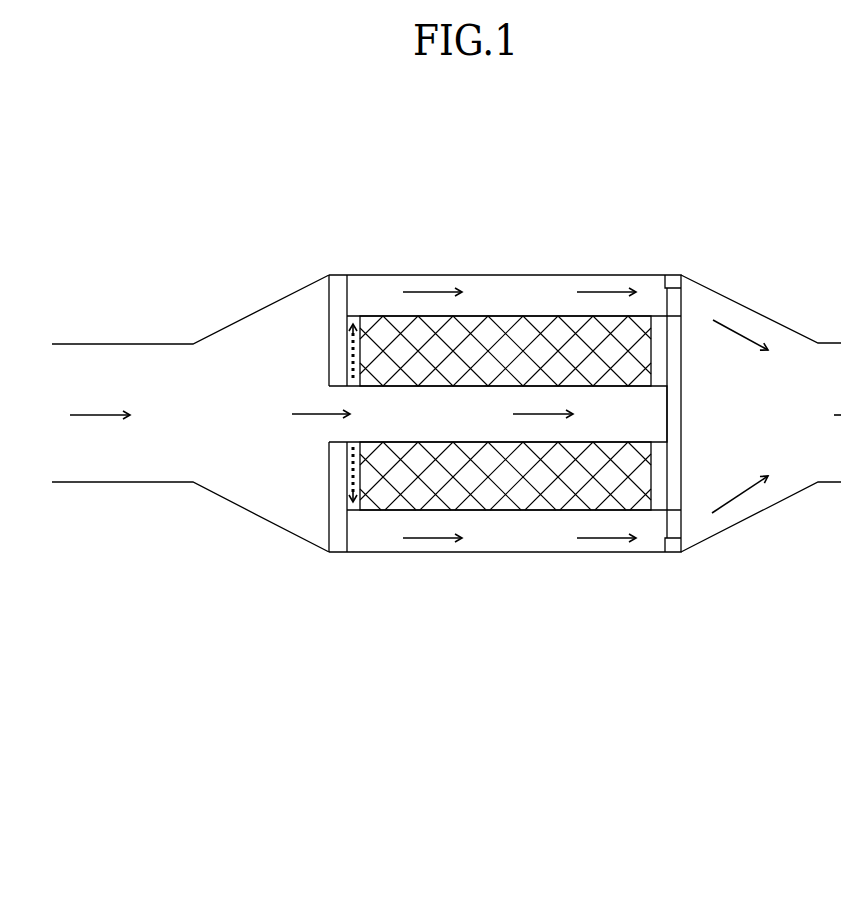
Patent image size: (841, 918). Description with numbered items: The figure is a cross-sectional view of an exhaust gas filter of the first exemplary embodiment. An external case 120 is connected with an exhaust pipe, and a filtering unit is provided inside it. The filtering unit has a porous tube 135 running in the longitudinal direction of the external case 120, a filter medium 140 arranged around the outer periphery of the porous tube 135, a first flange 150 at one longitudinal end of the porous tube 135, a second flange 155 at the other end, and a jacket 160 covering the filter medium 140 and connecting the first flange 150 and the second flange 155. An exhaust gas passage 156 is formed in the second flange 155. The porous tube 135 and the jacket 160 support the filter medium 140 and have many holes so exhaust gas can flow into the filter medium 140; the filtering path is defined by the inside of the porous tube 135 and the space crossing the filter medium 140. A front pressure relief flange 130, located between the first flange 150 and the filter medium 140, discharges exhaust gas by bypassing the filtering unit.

The external case 120 is at (380, 275).
The front pressure relief flange 130 is at (355, 512).
The porous tube 135 is at (481, 430).
The filter medium 140 is at (427, 495).
The first flange 150 is at (337, 533).
The second flange 155 is at (667, 495).
The exhaust gas passage 156 is at (673, 305).
The jacket 160 is at (490, 313).